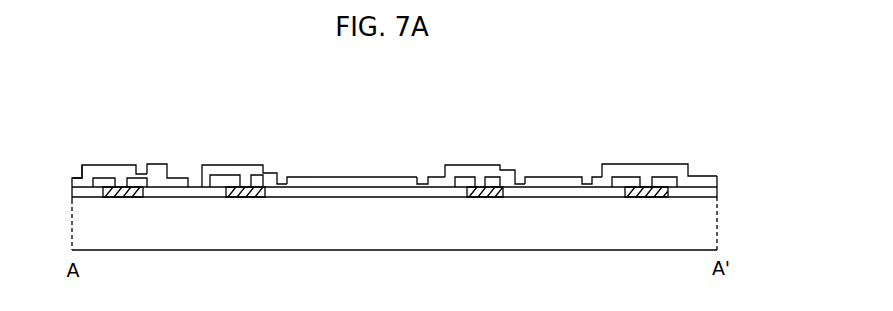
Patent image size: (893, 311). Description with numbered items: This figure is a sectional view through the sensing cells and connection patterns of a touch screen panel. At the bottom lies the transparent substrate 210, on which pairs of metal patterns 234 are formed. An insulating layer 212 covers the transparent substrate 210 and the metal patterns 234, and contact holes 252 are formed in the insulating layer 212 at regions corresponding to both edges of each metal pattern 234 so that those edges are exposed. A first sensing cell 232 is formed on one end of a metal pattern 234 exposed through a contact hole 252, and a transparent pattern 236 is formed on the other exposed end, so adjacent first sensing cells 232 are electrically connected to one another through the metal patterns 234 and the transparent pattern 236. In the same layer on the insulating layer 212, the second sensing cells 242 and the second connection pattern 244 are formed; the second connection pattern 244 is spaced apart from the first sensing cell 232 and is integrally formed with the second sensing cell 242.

The transparent substrate 210 is at (717, 233).
The insulating layer 212 is at (717, 190).
The first sensing cell 232 is at (118, 172).
The metal pattern 234 is at (122, 197).
The transparent pattern 236 is at (243, 172).
The second sensing cell 242 is at (179, 182).
The second connection pattern 244 is at (350, 182).
The contact hole 252 is at (98, 180).